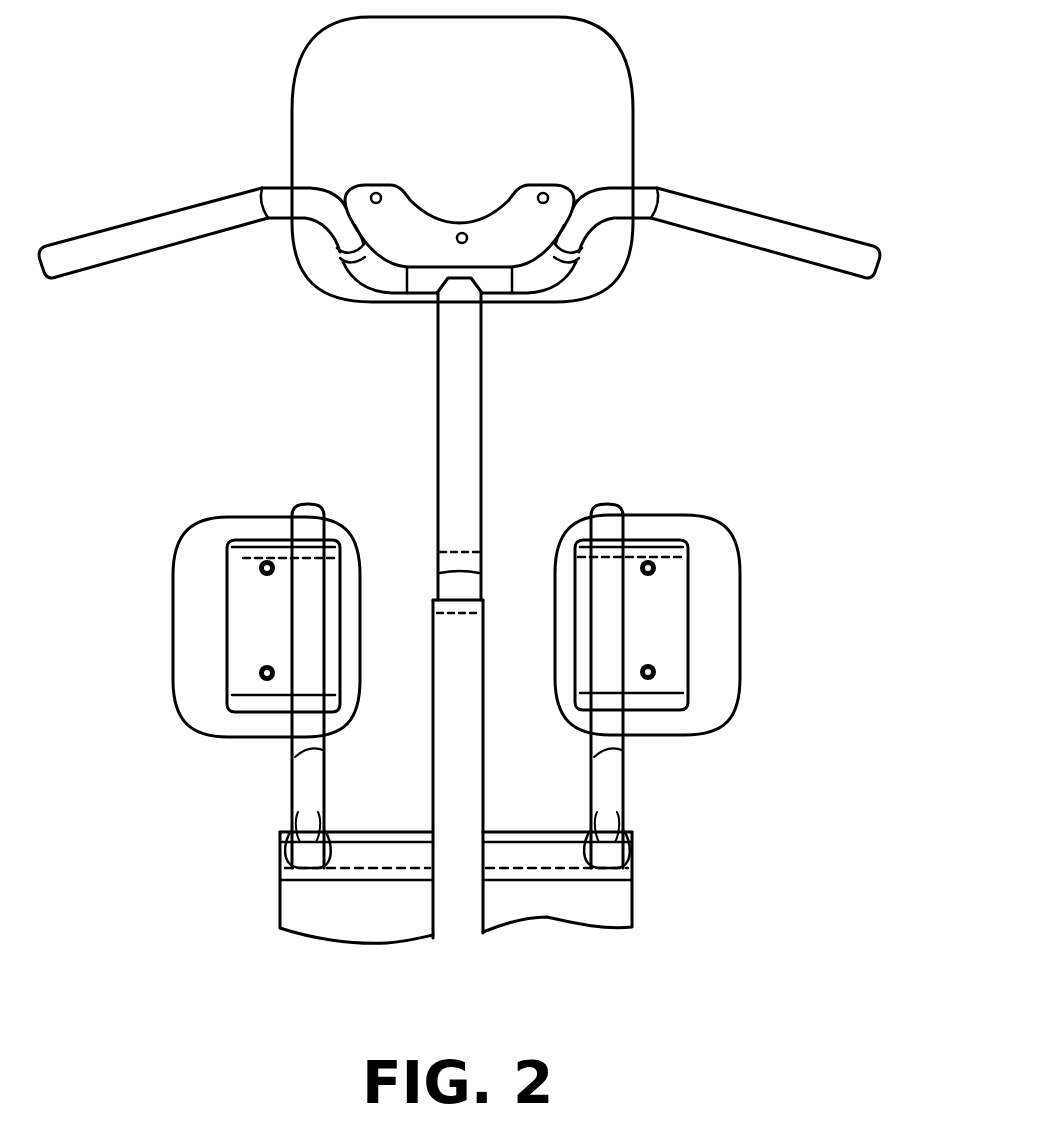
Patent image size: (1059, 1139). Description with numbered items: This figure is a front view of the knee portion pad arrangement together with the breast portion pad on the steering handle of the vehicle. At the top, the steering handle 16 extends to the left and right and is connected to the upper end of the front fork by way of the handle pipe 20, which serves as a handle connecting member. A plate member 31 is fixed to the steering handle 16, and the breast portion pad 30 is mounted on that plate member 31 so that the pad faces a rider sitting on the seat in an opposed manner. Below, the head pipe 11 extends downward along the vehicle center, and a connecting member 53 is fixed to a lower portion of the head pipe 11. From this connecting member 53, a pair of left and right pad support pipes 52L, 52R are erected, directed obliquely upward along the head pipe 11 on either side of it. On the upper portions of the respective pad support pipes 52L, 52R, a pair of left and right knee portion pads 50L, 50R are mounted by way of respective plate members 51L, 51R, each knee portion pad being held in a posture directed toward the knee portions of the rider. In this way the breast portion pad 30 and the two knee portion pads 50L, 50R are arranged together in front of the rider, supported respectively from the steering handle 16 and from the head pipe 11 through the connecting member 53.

The head pipe 11 is at (472, 742).
The steering handle 16 is at (787, 218).
The handle pipe 20 is at (470, 458).
The breast portion pad 30 is at (598, 105).
The plate member 31 is at (522, 238).
The left knee portion pad 50L is at (202, 570).
The right knee portion pad 50R is at (713, 568).
The left plate member 51L is at (242, 652).
The right plate member 51R is at (673, 648).
The left pad support pipe 52L is at (292, 787).
The right pad support pipe 52R is at (625, 783).
The connecting member 53 is at (632, 900).